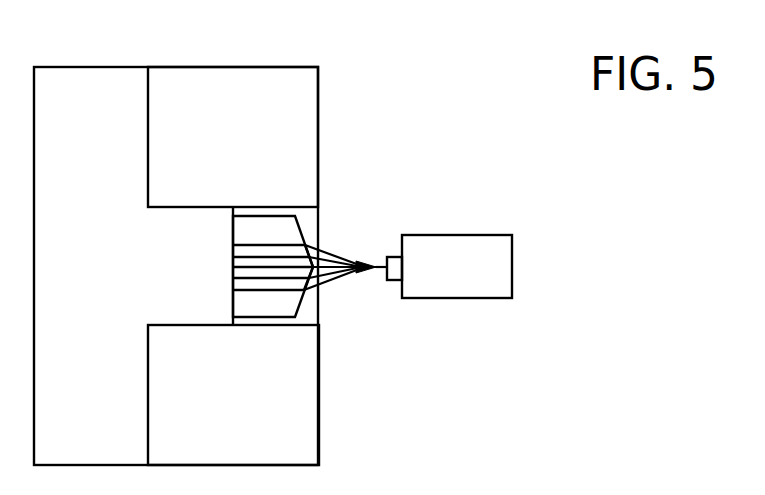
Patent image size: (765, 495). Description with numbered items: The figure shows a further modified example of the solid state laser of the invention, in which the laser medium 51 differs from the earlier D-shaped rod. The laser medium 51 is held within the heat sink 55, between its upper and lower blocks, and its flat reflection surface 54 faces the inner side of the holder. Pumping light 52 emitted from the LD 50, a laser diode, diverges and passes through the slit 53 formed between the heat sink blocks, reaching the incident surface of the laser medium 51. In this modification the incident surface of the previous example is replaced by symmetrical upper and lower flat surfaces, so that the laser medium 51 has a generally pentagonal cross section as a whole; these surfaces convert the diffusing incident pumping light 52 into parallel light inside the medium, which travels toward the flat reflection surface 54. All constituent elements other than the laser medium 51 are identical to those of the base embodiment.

The LD 50 is at (480, 235).
The laser medium 51 is at (287, 301).
The pumping light 52 is at (336, 254).
The slit 53 is at (313, 233).
The reflection surface 54 is at (233, 307).
The heat sink 55 is at (215, 95).